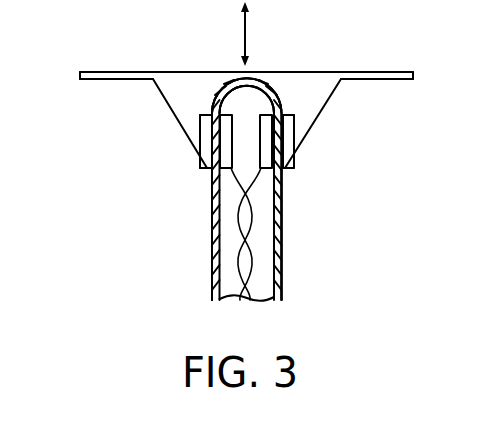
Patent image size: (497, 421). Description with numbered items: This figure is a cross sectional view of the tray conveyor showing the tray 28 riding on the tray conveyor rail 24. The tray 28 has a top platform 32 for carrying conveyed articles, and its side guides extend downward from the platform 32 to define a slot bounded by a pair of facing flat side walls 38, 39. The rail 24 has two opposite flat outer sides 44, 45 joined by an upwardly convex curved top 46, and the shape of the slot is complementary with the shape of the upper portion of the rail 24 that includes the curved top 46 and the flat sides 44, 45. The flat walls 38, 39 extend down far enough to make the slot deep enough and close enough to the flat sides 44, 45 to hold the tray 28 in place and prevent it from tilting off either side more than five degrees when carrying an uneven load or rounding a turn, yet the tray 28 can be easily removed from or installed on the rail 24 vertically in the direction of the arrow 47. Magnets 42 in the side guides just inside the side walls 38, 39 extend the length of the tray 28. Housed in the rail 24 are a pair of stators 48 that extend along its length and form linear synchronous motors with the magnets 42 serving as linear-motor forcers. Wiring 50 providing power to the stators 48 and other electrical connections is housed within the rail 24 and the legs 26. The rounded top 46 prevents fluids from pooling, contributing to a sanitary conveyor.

The tray conveyor rail 24 is at (286, 149).
The legs 26 is at (212, 275).
The tray 28 is at (299, 79).
The top platform 32 is at (148, 73).
The flat side wall 38 is at (212, 185).
The flat side wall 39 is at (282, 172).
The magnets 42 is at (201, 130).
The flat outer side 44 is at (217, 142).
The flat outer side 45 is at (286, 138).
The curved top 46 is at (217, 108).
The arrow 47 is at (246, 32).
The stators 48 is at (253, 117).
The wiring 50 is at (276, 265).